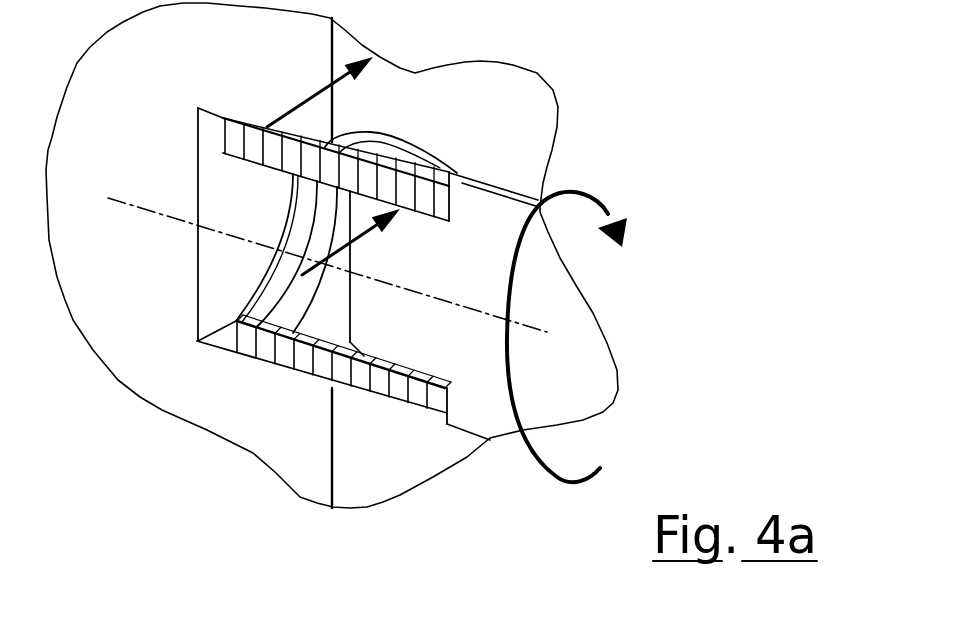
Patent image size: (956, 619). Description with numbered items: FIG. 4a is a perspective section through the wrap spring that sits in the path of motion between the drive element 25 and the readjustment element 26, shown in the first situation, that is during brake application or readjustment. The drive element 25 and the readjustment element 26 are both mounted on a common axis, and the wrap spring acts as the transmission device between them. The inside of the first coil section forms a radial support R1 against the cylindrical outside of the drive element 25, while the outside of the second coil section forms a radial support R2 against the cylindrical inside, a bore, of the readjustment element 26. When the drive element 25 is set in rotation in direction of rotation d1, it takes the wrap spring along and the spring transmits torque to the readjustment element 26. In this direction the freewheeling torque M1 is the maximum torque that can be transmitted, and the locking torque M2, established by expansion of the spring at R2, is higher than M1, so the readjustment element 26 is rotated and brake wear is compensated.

The drive element 25 is at (368, 336).
The readjustment element 26 is at (232, 379).
The radial support R1 is at (399, 372).
The radial support R2 is at (282, 365).
The freewheeling torque M1 is at (357, 244).
The locking torque M2 is at (320, 90).
The direction of rotation d1 is at (395, 337).